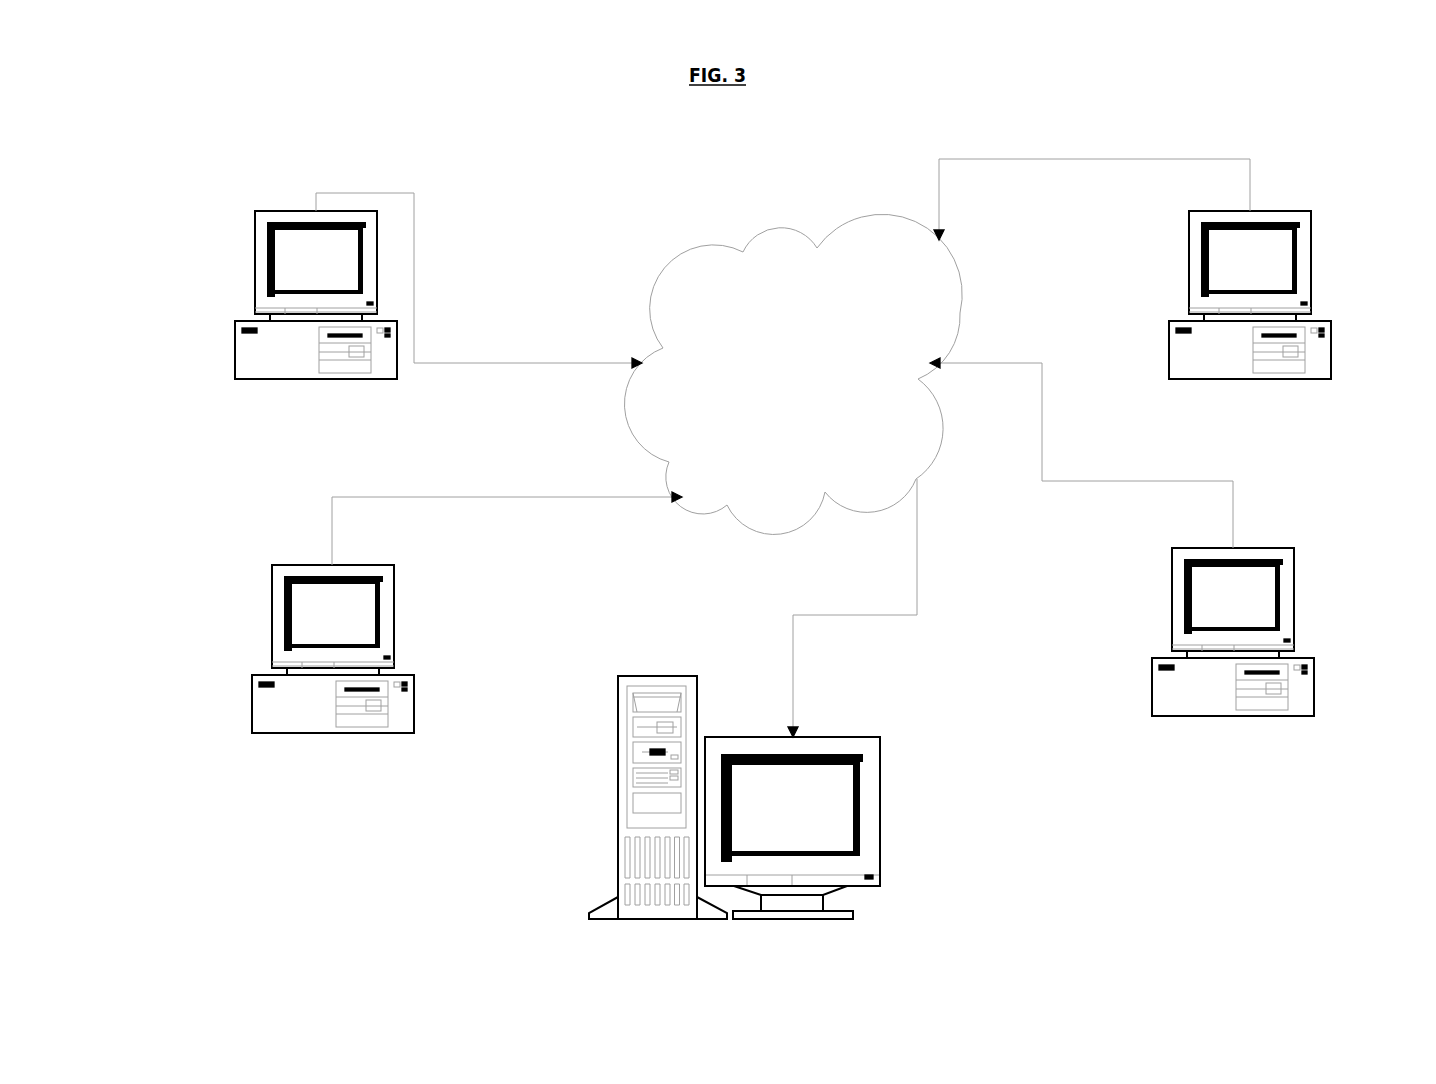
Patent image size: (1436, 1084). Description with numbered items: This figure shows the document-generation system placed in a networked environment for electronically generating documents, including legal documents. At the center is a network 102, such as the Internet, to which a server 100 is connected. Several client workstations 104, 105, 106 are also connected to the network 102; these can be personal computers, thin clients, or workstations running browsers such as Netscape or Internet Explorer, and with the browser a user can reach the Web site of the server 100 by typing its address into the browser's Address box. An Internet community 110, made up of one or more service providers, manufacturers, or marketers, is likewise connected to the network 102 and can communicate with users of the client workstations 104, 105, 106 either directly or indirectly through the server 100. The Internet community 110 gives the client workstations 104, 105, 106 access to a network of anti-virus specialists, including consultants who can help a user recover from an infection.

The server 100 is at (721, 713).
The network 102 is at (793, 373).
The client workstation 104 is at (407, 300).
The client workstation 105 is at (427, 626).
The client workstation 106 is at (1163, 283).
The Internet community 110 is at (1161, 552).